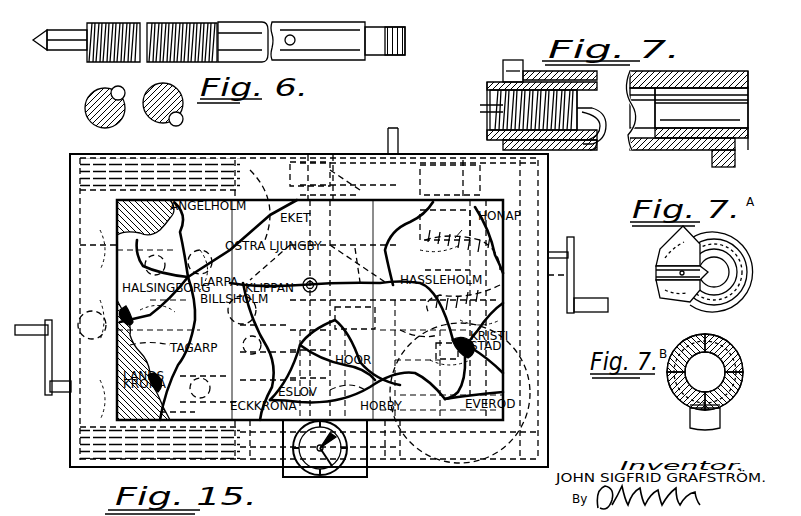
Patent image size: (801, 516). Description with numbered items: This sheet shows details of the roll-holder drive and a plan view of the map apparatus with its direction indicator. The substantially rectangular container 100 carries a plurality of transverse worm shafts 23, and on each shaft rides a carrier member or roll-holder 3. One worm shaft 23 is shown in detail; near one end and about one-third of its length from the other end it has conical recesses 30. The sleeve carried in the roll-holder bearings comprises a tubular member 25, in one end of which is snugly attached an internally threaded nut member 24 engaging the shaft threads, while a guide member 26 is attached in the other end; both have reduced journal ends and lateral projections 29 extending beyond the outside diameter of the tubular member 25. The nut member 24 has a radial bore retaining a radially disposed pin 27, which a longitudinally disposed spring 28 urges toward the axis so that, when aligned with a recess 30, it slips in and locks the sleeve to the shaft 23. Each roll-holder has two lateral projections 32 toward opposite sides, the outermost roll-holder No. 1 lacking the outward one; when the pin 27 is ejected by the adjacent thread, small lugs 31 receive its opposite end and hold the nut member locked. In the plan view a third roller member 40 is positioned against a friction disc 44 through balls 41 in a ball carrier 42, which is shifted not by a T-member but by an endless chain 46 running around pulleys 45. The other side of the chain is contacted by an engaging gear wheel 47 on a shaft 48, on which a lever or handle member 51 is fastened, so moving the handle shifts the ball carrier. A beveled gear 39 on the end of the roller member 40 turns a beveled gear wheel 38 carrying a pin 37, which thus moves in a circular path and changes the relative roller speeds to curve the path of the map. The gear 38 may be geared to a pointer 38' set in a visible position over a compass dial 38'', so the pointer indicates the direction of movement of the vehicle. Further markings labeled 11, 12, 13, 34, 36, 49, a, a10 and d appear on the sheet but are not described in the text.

In FIG. 15, the roll-holder No. 1 is at (362, 270).
In FIG. 15, the roll-holder 3 is at (178, 156).
In FIG. 15, the route marking 11 is at (462, 232).
In FIG. 15, the marked area 12 is at (470, 218).
In FIG. 15, the crank handle 13 is at (563, 246).
In FIG. 6, the worm shaft 23 is at (250, 28).
In FIG. 7, the nut member 24 is at (490, 80).
In FIG. 7A, the nut member 24 is at (730, 262).
In FIG. 7, the tubular member 25 is at (612, 160).
In FIG. 7A, the tubular member 25 is at (694, 303).
In FIG. 7B, the tubular member 25 is at (732, 345).
In FIG. 7, the guide member 26 is at (748, 80).
In FIG. 7, the radially disposed pin 27 is at (486, 108).
In FIG. 7A, the radially disposed pin 27 is at (656, 273).
In FIG. 7, the spring 28 is at (602, 126).
In FIG. 7, the lateral projection 29 is at (514, 59).
In FIG. 7A, the lateral projection 29 is at (698, 230).
In FIG. 7B, the lateral projection 29 is at (722, 418).
In FIG. 15, the lateral projection 29 is at (336, 262).
In FIG. 6, the conical recess 30 is at (118, 24).
In FIG. 15, the conical recess 30 is at (286, 180).
In FIG. 15, the lug 31 is at (356, 182).
In FIG. 15, the lateral projection 32 is at (350, 170).
In FIG. 15, the compass frame 34 is at (336, 314).
In FIG. 15, the scale ring 36 is at (304, 281).
In FIG. 15, the pin 37 is at (310, 364).
In FIG. 15, the beveled gear wheel 38 is at (350, 454).
In FIG. 15, the pointer 38' is at (331, 461).
In FIG. 15, the compass dial 38'' is at (321, 478).
In FIG. 15, the beveled gear 39 is at (270, 352).
In FIG. 15, the third roller member 40 is at (72, 415).
In FIG. 15, the balls 41 is at (177, 410).
In FIG. 15, the ball carrier 42 is at (180, 388).
In FIG. 15, the friction disc 44 is at (170, 466).
In FIG. 15, the pulleys 45 is at (72, 316).
In FIG. 15, the endless chain 46 is at (136, 372).
In FIG. 15, the engaging gear wheel 47 is at (80, 243).
In FIG. 15, the shaft 48 is at (170, 256).
In FIG. 15, the grid circle 49 is at (311, 290).
In FIG. 15, the lever or handle member 51 is at (26, 326).
In FIG. 15, the container 100 is at (72, 268).
In FIG. 15, the route point a is at (447, 272).
In FIG. 15, the crank axis a10 is at (578, 246).
In FIG. 15, the route point d is at (497, 310).